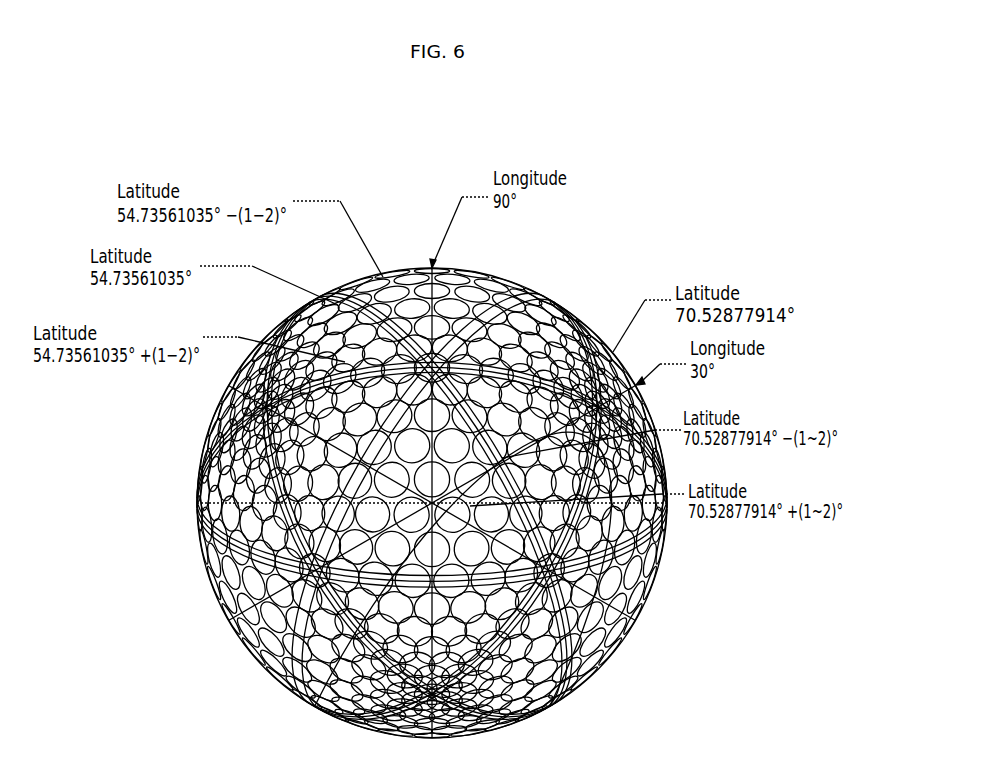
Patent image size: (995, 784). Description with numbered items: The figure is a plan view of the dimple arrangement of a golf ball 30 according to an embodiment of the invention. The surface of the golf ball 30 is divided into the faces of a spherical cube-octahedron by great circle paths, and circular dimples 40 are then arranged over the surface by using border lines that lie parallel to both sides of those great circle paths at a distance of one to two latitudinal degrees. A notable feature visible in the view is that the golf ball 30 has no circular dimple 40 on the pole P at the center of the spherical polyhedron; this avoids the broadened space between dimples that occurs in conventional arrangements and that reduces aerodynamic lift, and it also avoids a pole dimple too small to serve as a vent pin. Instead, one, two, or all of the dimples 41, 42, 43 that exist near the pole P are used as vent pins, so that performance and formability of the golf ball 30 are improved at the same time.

The golf ball 30 is at (388, 151).
The circular dimples 40 is at (545, 298).
The dimple 41 is at (245, 452).
The dimple 42 is at (262, 650).
The dimple 43 is at (598, 548).
The pole P is at (197, 503).